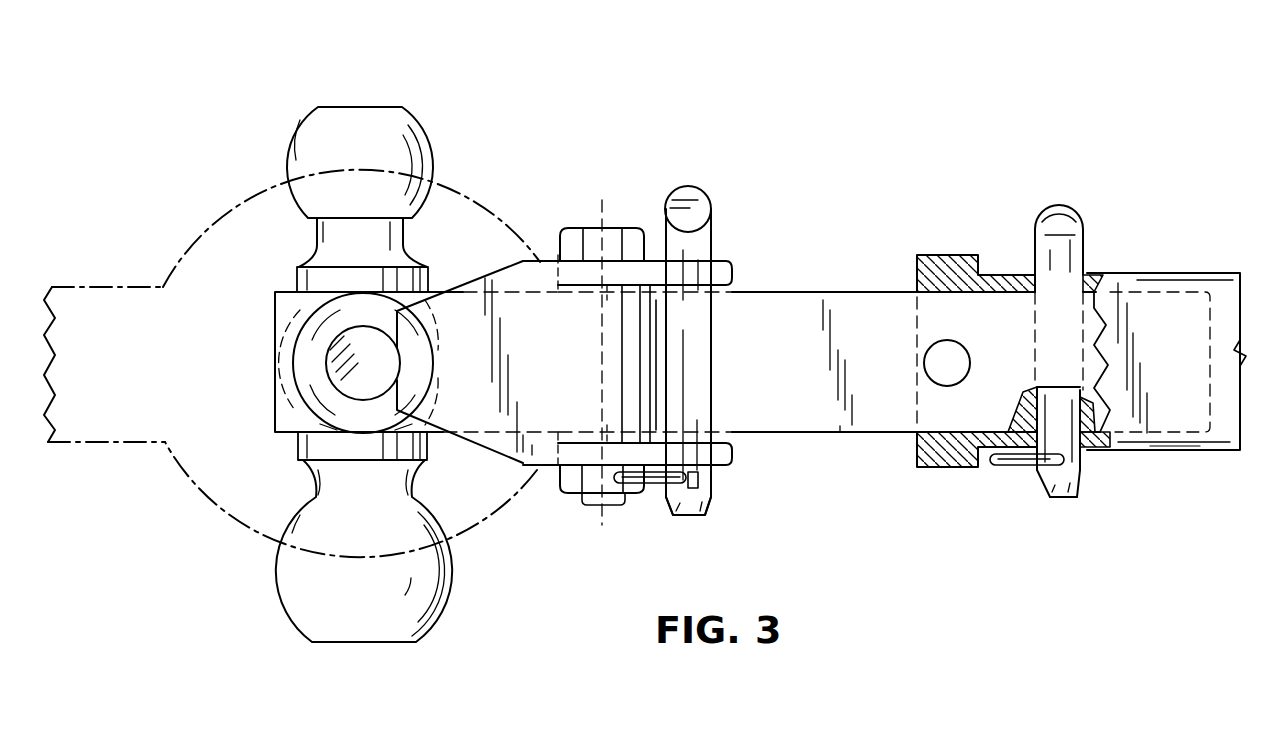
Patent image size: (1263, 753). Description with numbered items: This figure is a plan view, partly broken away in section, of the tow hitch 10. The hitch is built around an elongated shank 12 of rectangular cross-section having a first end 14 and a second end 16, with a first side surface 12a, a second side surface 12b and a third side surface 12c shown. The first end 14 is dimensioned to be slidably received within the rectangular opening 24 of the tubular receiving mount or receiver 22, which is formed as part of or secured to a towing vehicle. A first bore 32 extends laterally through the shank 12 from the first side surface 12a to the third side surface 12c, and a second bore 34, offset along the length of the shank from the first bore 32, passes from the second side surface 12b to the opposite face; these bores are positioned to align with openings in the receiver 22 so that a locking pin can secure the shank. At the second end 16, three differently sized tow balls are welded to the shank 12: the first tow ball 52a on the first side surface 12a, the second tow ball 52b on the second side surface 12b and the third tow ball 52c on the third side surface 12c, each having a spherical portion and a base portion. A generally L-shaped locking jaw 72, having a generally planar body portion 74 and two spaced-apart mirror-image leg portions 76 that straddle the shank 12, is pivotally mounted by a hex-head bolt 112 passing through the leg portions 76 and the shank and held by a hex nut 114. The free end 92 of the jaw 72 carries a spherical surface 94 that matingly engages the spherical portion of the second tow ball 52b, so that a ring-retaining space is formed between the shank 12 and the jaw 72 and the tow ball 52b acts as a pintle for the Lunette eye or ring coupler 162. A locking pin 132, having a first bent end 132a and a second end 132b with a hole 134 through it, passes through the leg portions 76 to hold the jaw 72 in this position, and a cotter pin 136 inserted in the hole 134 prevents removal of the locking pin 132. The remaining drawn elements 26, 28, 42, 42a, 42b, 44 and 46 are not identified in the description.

The tow hitch 10 is at (504, 100).
The shank 12 is at (826, 292).
The first side surface 12a is at (795, 290).
The second side surface 12b is at (863, 322).
The third side surface 12c is at (845, 434).
The first end 14 is at (1187, 421).
The second end 16 is at (278, 426).
The receiving mount 22 is at (1163, 451).
The opening 24 is at (1224, 294).
The collar sleeve 26 is at (1090, 276).
The detent block 28 is at (1087, 462).
The first bore 32 is at (1066, 400).
The second bore 34 is at (946, 352).
The hitch pin 42 is at (1070, 206).
The hitch pin head 42a is at (1035, 236).
The hitch pin lower end 42b is at (1046, 478).
The pin tip 44 is at (1052, 482).
The retaining clip 46 is at (1000, 464).
The first tow ball 52a is at (366, 118).
The second tow ball 52b is at (300, 371).
The third tow ball 52c is at (306, 626).
The locking jaw 72 is at (503, 257).
The body portion 74 is at (476, 312).
The leg portions 76 is at (734, 260).
The free end 92 is at (411, 424).
The surface 94 is at (403, 358).
The hex-head bolt 112 is at (571, 238).
The hex nut 114 is at (569, 482).
The locking pin 132 is at (702, 186).
The first bent end 132a is at (677, 188).
The second end 132b is at (714, 502).
The hole 134 is at (713, 486).
The cotter pin 136 is at (661, 488).
The ring coupler 162 is at (236, 206).